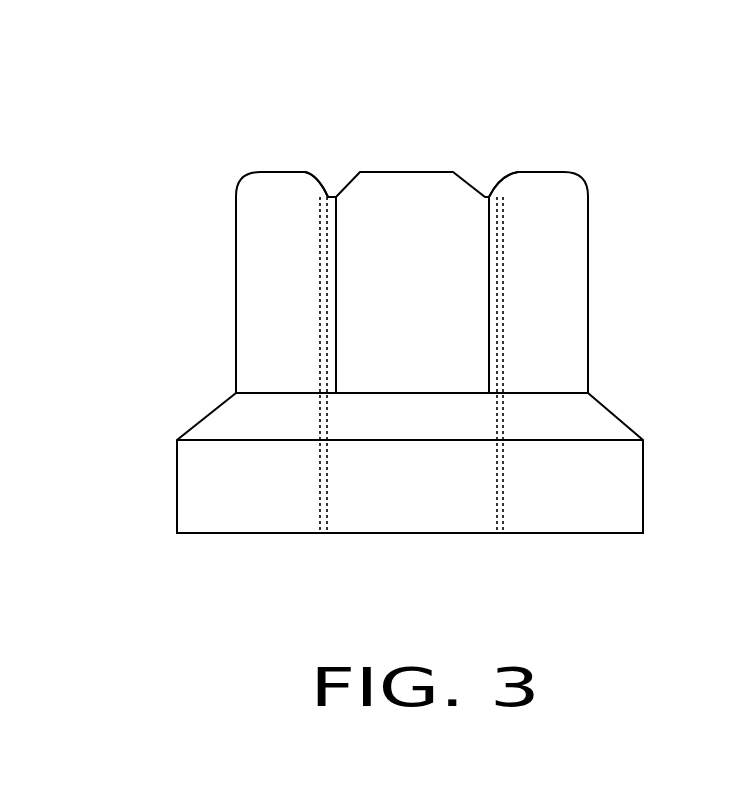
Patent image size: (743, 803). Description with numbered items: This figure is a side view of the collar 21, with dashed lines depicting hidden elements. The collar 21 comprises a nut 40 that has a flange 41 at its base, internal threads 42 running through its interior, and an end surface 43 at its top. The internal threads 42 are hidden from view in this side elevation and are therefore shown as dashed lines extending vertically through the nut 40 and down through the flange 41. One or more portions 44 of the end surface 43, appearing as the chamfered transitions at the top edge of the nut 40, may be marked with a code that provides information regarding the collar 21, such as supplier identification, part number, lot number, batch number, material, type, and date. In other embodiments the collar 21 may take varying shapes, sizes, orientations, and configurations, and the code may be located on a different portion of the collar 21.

The collar 21 is at (598, 155).
The nut 40 is at (588, 318).
The flange 41 is at (644, 492).
The internal threads 42 is at (320, 293).
The end surface 43 is at (412, 172).
The portions of the end surface 44 is at (283, 172).